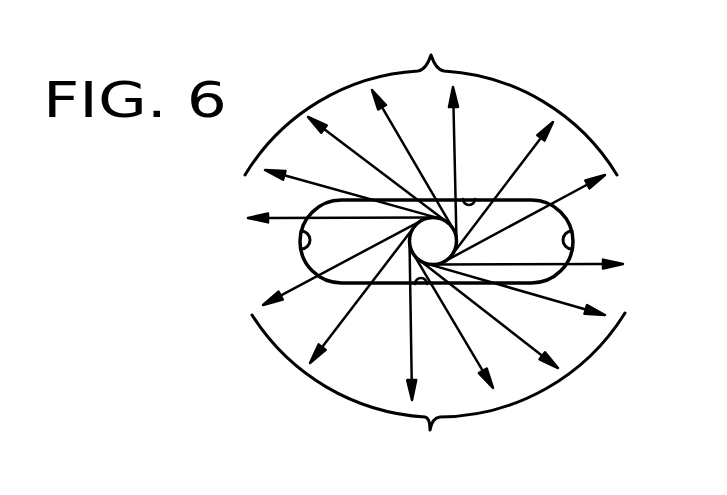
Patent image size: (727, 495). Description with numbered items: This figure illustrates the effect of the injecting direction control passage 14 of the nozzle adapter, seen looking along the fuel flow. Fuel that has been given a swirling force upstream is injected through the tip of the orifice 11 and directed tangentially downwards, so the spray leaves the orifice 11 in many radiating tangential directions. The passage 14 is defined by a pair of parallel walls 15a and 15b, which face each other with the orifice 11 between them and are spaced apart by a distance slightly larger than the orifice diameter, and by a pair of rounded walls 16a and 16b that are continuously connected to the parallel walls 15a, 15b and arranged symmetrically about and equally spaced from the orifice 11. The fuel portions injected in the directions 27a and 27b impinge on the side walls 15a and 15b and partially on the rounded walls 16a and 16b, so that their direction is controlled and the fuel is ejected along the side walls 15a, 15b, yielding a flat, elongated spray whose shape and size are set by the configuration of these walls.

The orifice 11 is at (430, 248).
The injecting direction control passage 14 is at (538, 236).
The parallel wall 15a is at (478, 198).
The parallel wall 15b is at (424, 284).
The rounded wall 16a is at (301, 248).
The rounded wall 16b is at (572, 243).
The injecting direction 27a is at (431, 92).
The injecting direction 27b is at (438, 392).